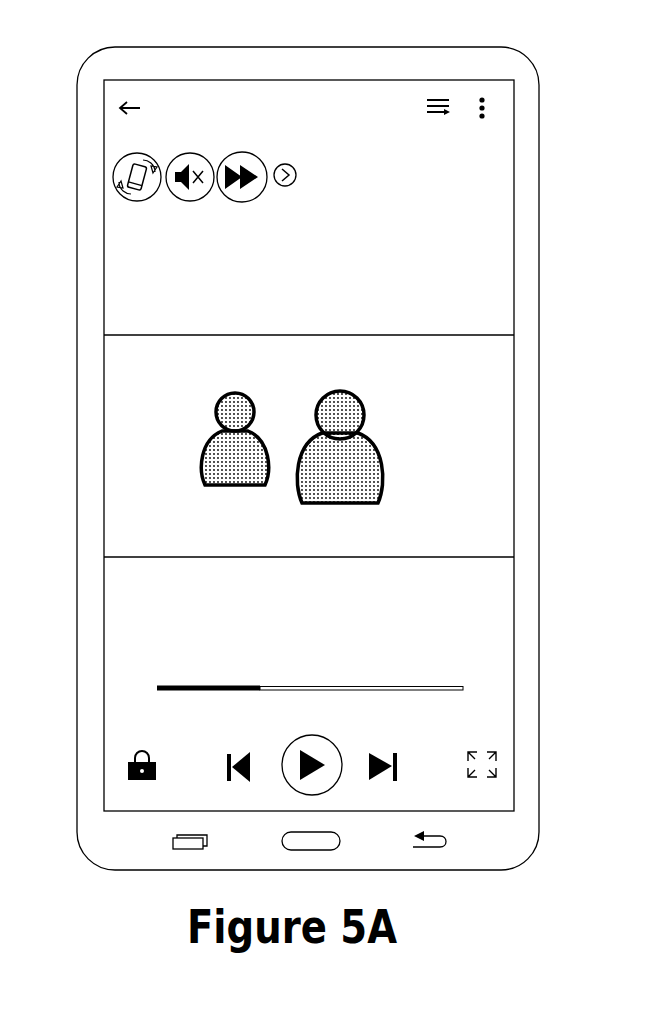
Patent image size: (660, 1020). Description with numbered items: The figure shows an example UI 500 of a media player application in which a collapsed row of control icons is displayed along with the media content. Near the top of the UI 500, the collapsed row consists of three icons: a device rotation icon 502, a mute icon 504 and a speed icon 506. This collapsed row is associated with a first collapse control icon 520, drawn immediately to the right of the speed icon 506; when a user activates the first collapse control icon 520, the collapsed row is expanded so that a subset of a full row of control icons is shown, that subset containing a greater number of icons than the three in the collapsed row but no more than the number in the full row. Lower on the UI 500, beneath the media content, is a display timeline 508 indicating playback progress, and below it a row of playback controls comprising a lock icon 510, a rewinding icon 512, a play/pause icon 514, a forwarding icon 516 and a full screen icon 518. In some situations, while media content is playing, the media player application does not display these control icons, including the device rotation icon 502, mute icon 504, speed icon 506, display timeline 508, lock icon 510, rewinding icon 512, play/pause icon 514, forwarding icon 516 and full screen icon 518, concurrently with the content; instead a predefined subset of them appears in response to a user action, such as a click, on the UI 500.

The UI 500 is at (548, 93).
The device rotation icon 502 is at (142, 166).
The mute icon 504 is at (186, 198).
The speed icon 506 is at (242, 166).
The display timeline 508 is at (311, 686).
The lock icon 510 is at (141, 755).
The rewinding icon 512 is at (228, 753).
The play/pause icon 514 is at (308, 750).
The forwarding icon 516 is at (394, 751).
The full screen icon 518 is at (490, 756).
The first collapse control icon 520 is at (290, 186).